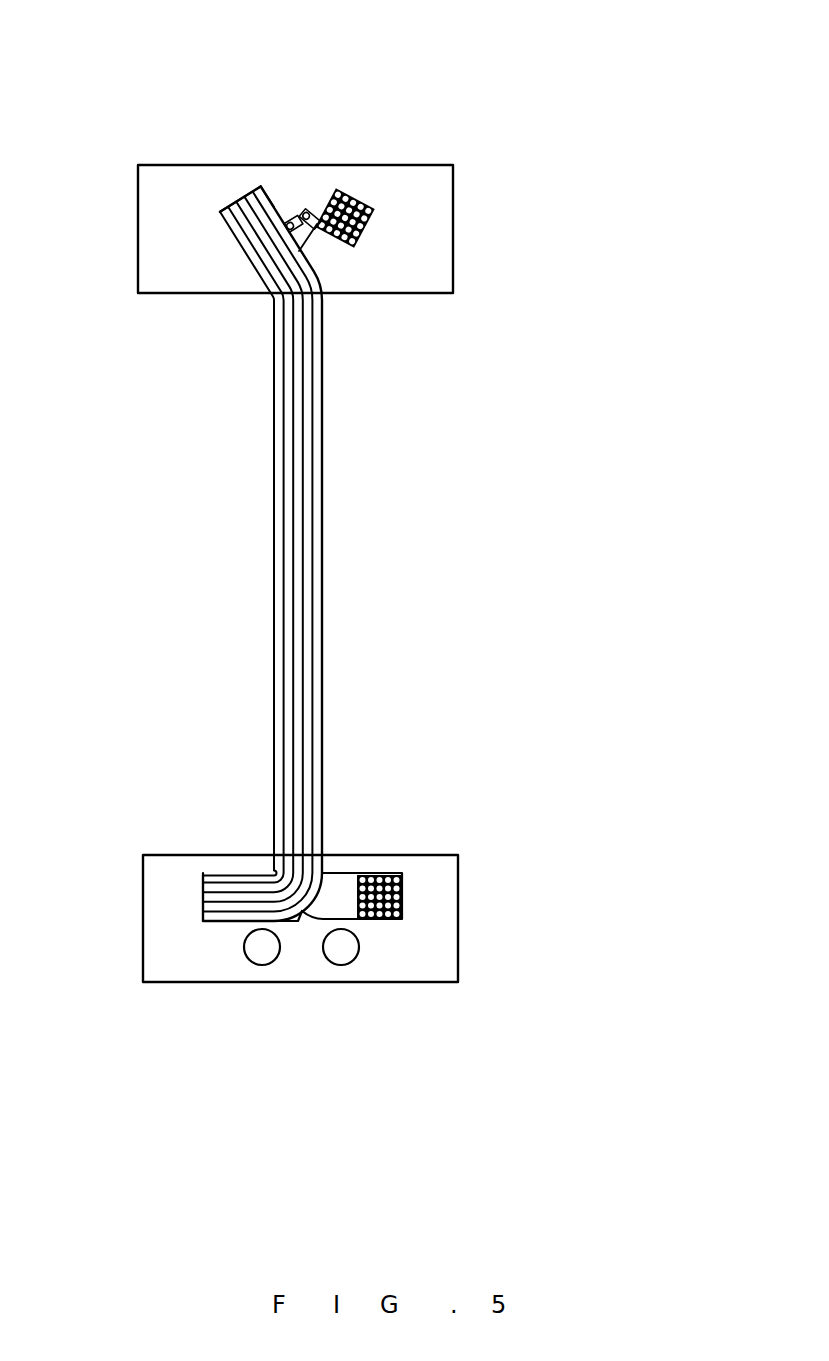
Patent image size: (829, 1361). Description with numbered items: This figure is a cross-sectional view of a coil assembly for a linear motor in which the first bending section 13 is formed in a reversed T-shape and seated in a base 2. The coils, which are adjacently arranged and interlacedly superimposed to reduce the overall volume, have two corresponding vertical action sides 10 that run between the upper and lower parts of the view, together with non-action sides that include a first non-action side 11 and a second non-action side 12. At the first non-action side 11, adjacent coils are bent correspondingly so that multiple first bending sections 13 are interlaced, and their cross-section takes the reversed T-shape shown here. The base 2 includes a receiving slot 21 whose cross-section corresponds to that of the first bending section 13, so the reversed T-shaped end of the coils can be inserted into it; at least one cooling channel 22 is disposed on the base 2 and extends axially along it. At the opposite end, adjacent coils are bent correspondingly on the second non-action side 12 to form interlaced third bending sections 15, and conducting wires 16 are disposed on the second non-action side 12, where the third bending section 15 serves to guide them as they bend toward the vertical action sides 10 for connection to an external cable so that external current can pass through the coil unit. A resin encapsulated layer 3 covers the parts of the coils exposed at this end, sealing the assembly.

The base 2 is at (427, 917).
The resin encapsulated layer 3 is at (437, 218).
The vertical action sides 10 is at (300, 625).
The first non-action side 11 is at (302, 913).
The second non-action side 12 is at (298, 247).
The first bending sections 13 is at (260, 899).
The third bending sections 15 is at (243, 202).
The conducting wires 16 is at (305, 214).
The receiving slot 21 is at (393, 921).
The cooling channel 22 is at (262, 947).